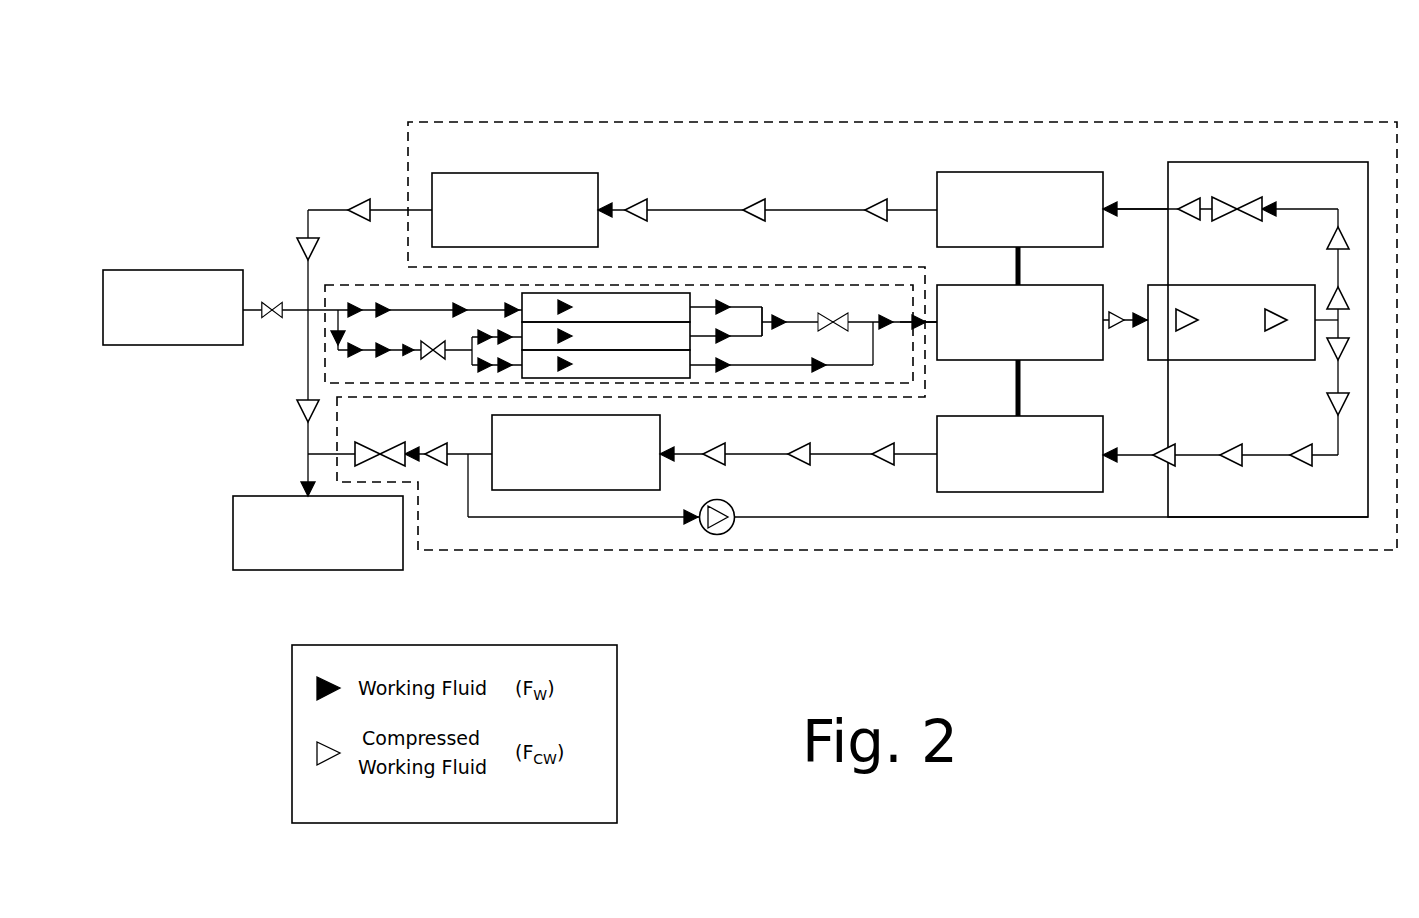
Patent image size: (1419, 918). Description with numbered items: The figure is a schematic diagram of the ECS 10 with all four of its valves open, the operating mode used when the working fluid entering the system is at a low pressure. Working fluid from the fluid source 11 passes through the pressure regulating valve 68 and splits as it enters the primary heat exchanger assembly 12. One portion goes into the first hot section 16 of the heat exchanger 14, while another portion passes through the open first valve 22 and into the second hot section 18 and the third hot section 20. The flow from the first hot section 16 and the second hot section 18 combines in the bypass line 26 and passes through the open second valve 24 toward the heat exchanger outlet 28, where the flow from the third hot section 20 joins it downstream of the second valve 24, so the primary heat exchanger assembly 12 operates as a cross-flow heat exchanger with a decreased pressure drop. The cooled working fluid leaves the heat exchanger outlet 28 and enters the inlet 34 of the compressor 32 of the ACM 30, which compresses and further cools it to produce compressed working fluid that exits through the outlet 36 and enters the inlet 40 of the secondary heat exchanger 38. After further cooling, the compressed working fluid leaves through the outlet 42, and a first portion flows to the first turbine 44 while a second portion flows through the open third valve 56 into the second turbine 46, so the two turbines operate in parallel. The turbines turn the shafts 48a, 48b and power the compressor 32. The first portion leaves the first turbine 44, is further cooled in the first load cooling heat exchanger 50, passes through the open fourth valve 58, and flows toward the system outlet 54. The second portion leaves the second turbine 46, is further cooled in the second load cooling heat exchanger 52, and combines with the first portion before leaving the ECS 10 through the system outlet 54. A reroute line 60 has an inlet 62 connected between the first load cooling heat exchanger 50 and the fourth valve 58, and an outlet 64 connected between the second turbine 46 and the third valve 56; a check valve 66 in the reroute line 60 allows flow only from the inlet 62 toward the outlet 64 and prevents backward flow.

The ECS 10 is at (330, 103).
The fluid source 11 is at (162, 321).
The primary heat exchanger assembly 12 is at (778, 285).
The heat exchanger 14 is at (660, 292).
The first hot section 16 is at (594, 318).
The second hot section 18 is at (594, 347).
The third hot section 20 is at (594, 376).
The first valve 22 is at (436, 344).
The second valve 24 is at (836, 317).
The bypass line 26 is at (762, 310).
The heat exchanger outlet 28 is at (909, 320).
The ACM 30 is at (817, 122).
The compressor 32 is at (1009, 333).
The inlet 34 is at (942, 310).
The outlet 36 is at (1098, 310).
The secondary heat exchanger 38 is at (1221, 333).
The inlet 40 is at (1157, 310).
The outlet 42 is at (1306, 310).
The first turbine 44 is at (1009, 465).
The second turbine 46 is at (1009, 220).
The shaft 48a is at (1022, 267).
The shaft 48b is at (1022, 389).
The first load cooling heat exchanger 50 is at (565, 463).
The second load cooling heat exchanger 52 is at (504, 221).
The system outlet 54 is at (307, 543).
The third valve 56 is at (1239, 208).
The fourth valve 58 is at (382, 450).
The reroute line 60 is at (565, 518).
The inlet 62 is at (467, 458).
The outlet 64 is at (1165, 209).
The check valve 66 is at (730, 505).
The pressure regulating valve 68 is at (272, 304).